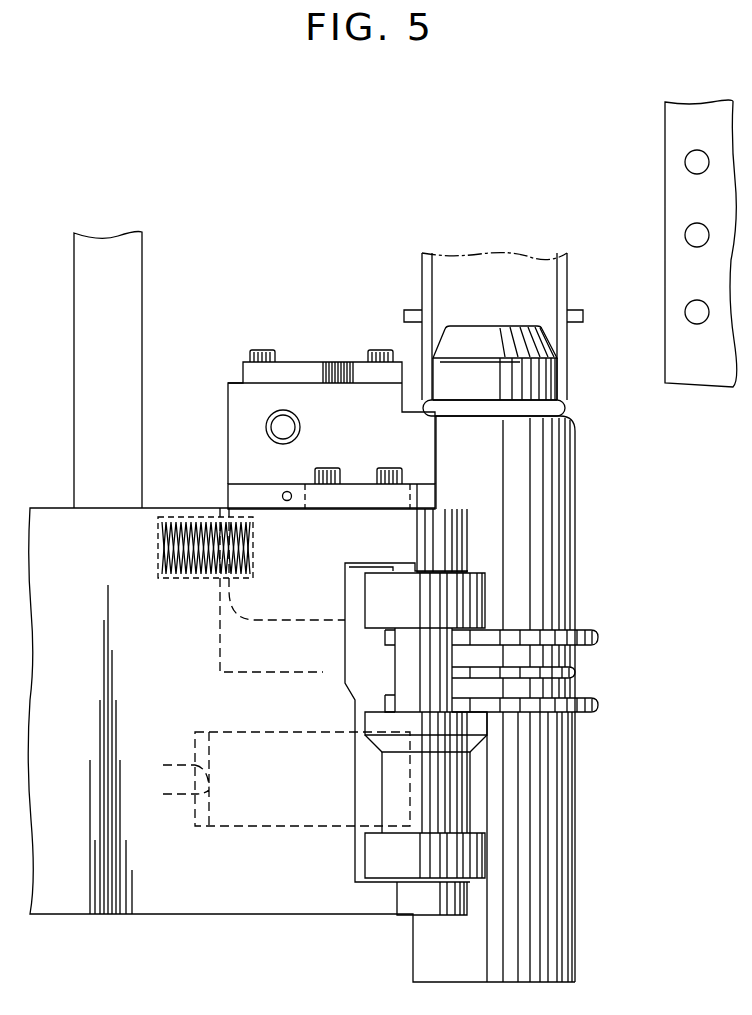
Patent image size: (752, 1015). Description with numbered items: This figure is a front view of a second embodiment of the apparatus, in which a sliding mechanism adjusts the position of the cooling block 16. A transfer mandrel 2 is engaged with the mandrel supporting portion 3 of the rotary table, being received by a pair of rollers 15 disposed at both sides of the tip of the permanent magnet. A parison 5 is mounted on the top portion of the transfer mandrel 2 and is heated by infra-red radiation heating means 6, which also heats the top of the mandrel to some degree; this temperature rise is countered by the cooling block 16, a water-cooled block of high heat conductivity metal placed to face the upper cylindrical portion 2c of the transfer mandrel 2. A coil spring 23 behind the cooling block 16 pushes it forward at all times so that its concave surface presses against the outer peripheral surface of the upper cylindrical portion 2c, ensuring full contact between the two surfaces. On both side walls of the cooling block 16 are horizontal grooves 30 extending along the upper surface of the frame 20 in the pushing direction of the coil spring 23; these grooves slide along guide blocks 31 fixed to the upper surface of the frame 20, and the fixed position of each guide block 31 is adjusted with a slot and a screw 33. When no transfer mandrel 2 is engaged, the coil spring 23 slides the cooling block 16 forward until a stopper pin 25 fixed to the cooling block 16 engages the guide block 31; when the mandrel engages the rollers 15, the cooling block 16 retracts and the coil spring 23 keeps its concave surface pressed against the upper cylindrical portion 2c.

The transfer mandrel 2 is at (576, 531).
The upper cylindrical portion 2c is at (575, 452).
The mandrel supporting portion 3 is at (262, 917).
The parison 5 is at (558, 304).
The infra-red radiation heating means 6 is at (670, 141).
The rollers 15 is at (388, 777).
The cooling block 16 is at (228, 433).
The frame 20 is at (458, 548).
The coil spring 23 is at (198, 566).
The stopper pin 25 is at (287, 491).
The horizontal grooves 30 is at (240, 500).
The guide block 31 is at (362, 494).
The screw 33 is at (327, 468).